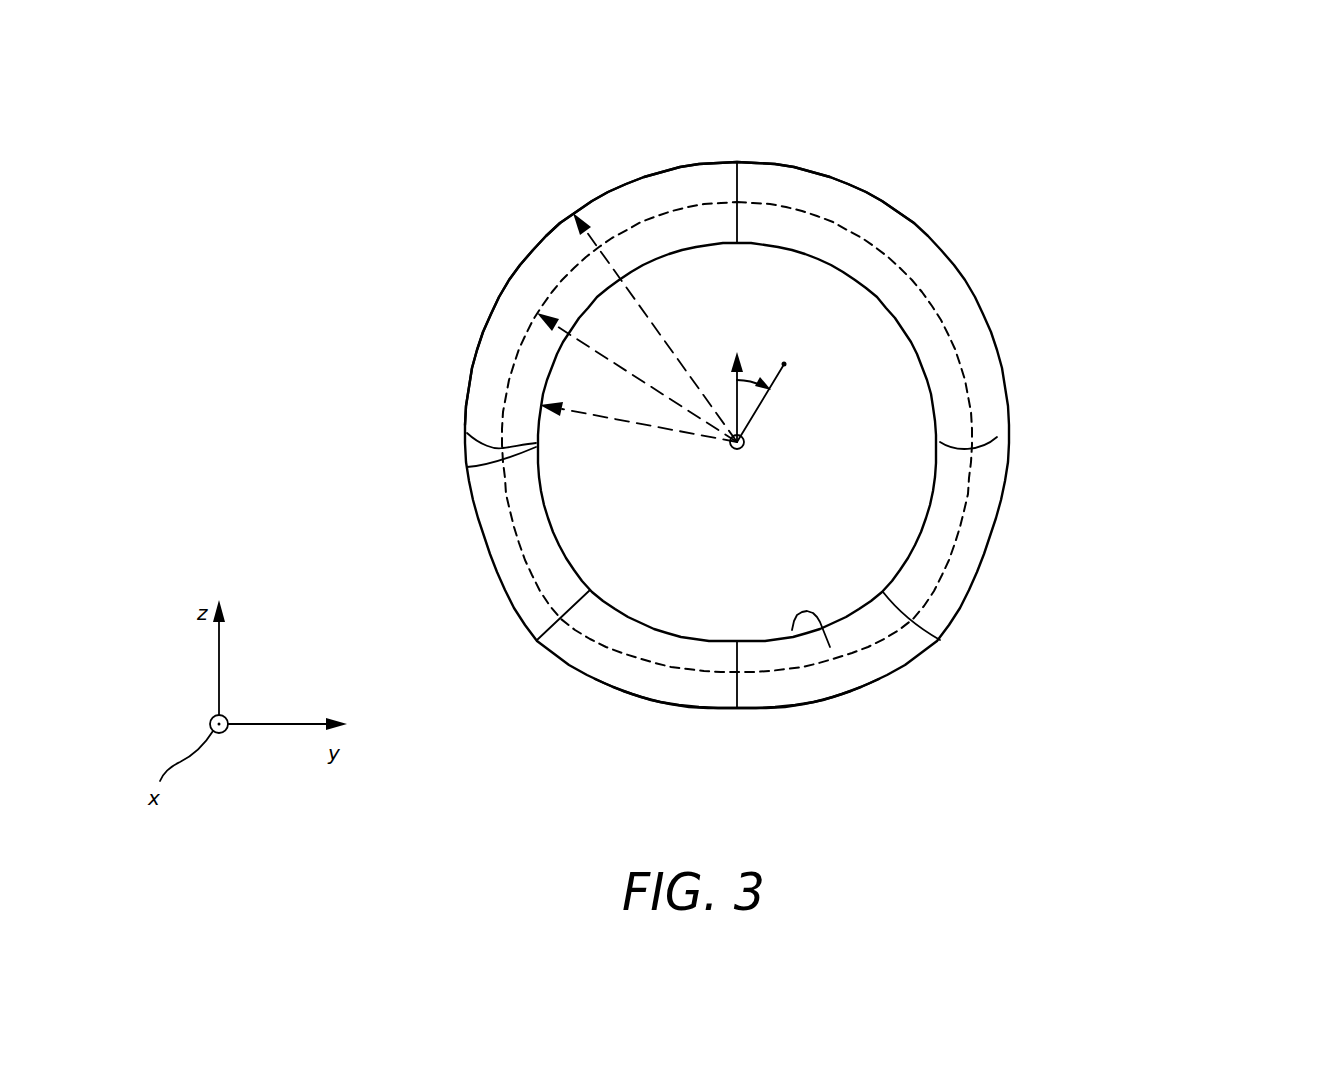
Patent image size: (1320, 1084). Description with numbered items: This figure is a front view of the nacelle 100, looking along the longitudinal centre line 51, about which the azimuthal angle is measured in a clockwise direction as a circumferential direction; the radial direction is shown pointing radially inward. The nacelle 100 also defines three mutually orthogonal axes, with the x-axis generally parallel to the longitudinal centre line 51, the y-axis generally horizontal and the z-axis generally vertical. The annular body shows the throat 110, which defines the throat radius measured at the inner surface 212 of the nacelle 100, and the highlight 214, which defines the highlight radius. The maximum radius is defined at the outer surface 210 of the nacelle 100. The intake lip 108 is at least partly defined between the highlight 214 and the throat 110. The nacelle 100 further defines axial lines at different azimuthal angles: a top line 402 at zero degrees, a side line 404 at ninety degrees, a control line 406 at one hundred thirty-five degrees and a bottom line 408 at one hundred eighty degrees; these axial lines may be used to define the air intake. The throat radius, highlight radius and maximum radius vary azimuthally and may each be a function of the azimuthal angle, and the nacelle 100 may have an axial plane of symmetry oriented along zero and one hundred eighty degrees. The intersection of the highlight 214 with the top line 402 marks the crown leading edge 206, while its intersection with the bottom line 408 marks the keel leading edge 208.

The nacelle 100 is at (1152, 156).
The intake lip 108 is at (925, 328).
The throat 110 is at (548, 545).
The crown leading edge 206 is at (733, 201).
The keel leading edge 208 is at (733, 673).
The outer surface 210 is at (490, 327).
The inner surface 212 is at (830, 647).
The highlight 214 is at (467, 467).
The top line 402 is at (738, 190).
The side line 404 is at (997, 437).
The control line 406 is at (905, 622).
The bottom line 408 is at (740, 687).
The longitudinal centre line 51 is at (740, 443).